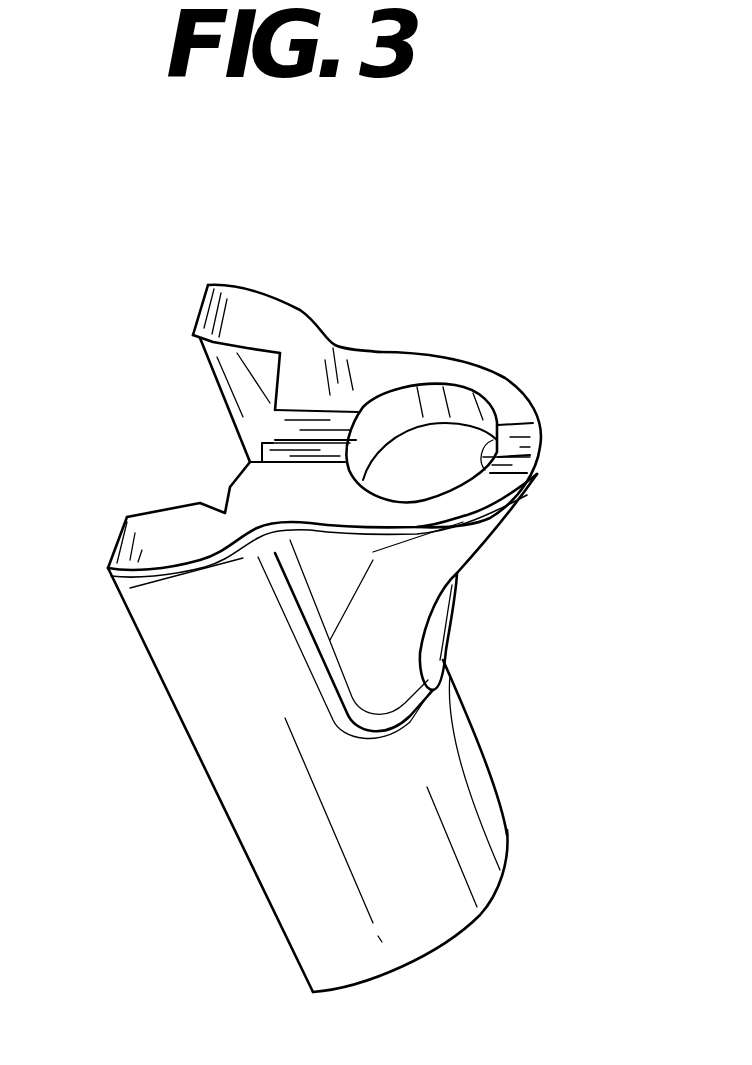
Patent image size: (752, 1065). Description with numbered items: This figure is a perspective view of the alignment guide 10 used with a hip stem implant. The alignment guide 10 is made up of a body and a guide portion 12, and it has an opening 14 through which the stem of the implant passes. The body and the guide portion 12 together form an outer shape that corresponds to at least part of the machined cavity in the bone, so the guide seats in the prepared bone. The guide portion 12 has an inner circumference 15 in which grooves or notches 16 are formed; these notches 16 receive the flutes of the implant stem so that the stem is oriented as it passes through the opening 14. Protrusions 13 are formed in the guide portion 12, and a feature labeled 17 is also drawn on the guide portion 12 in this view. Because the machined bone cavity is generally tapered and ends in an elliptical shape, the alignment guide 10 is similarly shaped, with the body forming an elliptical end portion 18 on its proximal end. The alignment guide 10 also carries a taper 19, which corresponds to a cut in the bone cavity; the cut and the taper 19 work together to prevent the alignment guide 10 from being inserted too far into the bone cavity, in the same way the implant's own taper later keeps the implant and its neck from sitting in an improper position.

The alignment guide 10 is at (505, 773).
The guide portion 12 is at (230, 313).
The protrusions 13 is at (200, 502).
The opening 14 is at (436, 448).
The inner circumference 15 is at (205, 344).
The grooves or notches 16 is at (270, 358).
The slot 17 is at (188, 437).
The elliptical end portion 18 is at (523, 474).
The taper 19 is at (442, 628).